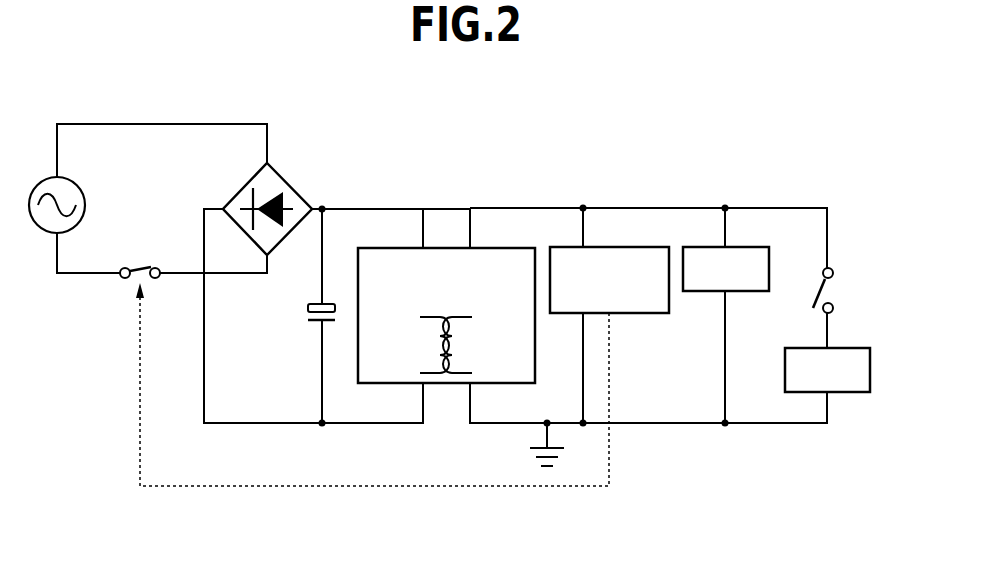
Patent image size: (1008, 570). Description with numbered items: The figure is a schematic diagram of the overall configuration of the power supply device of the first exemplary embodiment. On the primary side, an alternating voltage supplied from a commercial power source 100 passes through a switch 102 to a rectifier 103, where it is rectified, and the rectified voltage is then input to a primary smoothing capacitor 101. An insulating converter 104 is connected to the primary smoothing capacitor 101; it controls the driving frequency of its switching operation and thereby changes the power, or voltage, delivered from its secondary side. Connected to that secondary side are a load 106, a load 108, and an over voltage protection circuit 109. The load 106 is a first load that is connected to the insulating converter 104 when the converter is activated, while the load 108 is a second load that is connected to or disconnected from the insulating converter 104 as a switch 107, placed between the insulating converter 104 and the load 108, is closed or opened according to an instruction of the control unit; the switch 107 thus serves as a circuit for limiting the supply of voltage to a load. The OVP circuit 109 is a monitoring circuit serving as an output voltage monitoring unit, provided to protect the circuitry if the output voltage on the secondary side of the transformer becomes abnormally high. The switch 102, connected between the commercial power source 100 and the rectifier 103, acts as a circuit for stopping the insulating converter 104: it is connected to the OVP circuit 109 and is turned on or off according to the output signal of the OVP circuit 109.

The commercial power source 100 is at (80, 190).
The primary smoothing capacitor 101 is at (306, 308).
The switch 102 is at (140, 266).
The rectifier 103 is at (288, 180).
The insulating converter 104 is at (447, 385).
The load 106 is at (750, 291).
The switch 107 is at (833, 290).
The load 108 is at (855, 393).
The over voltage protection (OVP) circuit 109 is at (645, 313).